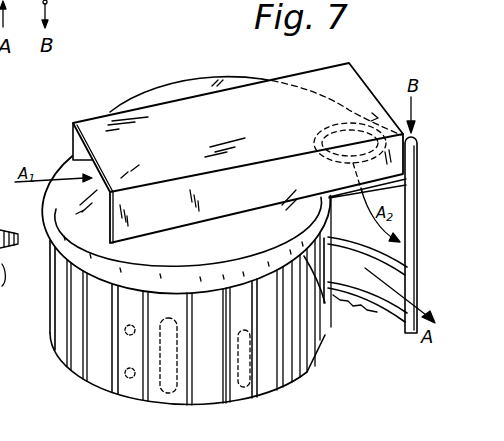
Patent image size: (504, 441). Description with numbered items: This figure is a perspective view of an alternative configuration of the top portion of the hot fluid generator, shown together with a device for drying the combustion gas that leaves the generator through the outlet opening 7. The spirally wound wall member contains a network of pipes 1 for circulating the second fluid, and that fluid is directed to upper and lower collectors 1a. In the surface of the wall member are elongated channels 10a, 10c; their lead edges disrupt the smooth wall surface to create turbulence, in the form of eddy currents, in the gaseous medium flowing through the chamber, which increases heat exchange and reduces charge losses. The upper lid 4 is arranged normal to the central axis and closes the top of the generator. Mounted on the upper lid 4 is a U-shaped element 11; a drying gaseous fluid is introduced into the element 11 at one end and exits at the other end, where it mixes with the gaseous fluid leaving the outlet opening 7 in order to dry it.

The pipes 1 is at (113, 339).
The collectors 1a is at (325, 303).
The upper lid member 4 is at (66, 168).
The outlet opening 7 is at (394, 277).
The channel 10a is at (116, 388).
The channel 10c is at (265, 377).
The U-shaped element 11 is at (142, 118).